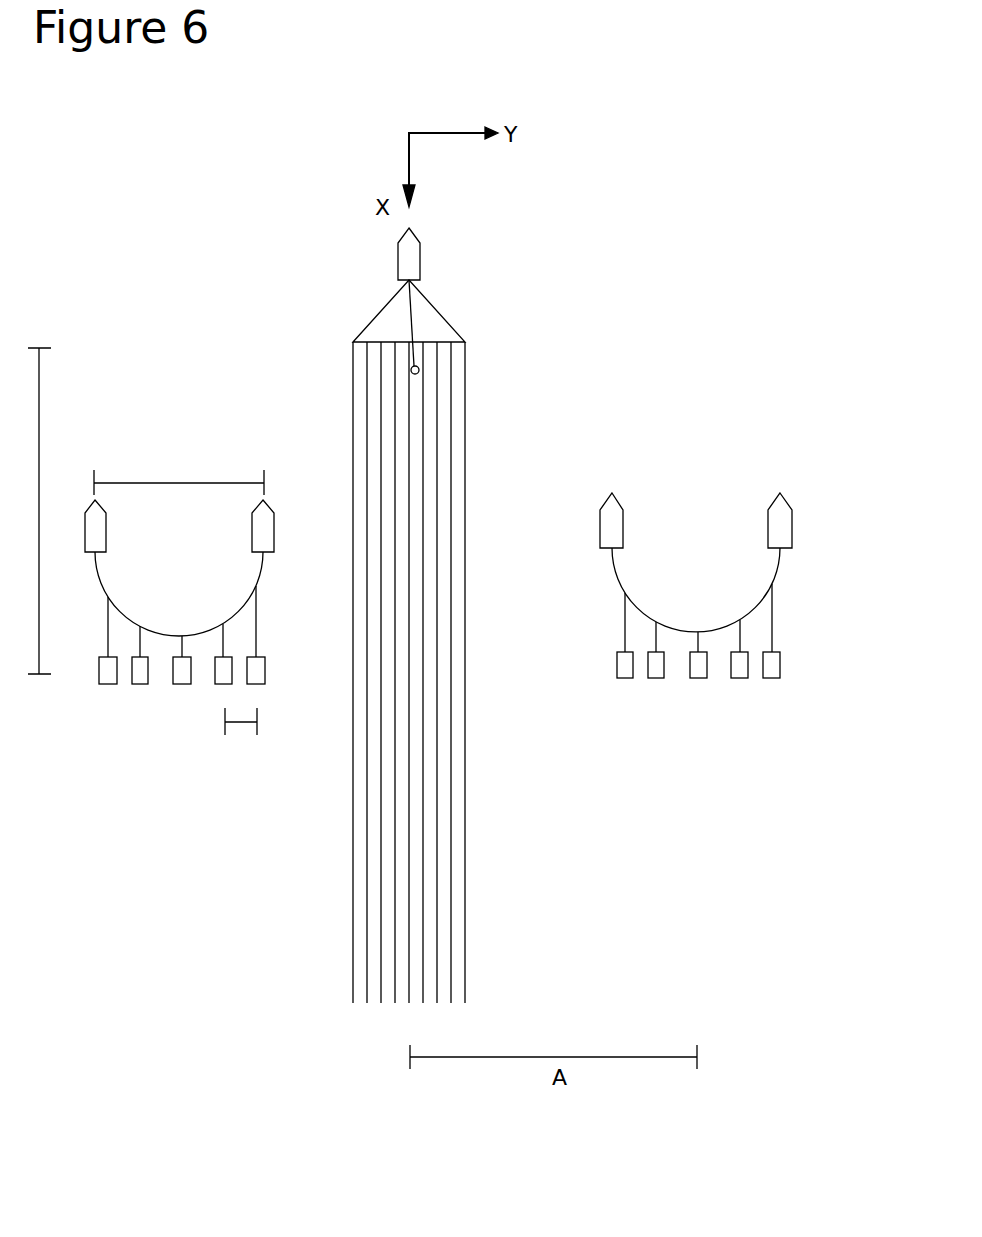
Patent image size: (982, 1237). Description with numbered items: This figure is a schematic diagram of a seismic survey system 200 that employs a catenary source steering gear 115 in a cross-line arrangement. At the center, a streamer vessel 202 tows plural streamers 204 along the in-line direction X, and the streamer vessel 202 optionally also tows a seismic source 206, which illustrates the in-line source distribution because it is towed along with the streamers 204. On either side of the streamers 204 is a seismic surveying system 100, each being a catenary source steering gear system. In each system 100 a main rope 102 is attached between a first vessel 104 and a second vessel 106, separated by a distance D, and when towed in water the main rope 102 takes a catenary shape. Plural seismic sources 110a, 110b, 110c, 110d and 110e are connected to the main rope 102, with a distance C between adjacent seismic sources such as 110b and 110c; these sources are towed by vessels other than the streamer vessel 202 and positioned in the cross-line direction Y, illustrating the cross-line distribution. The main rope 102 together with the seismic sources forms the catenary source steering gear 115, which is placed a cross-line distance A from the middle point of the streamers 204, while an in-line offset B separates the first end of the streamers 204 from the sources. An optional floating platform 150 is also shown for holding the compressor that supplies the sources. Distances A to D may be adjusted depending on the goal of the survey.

The seismic survey system 200 is at (295, 195).
The streamer vessel 202 is at (408, 262).
The streamers 204 is at (422, 412).
The seismic source 206 is at (418, 367).
The seismic surveying system 100 is at (204, 402).
The main rope 102 is at (128, 612).
The first vessel 104 is at (90, 520).
The second vessel 106 is at (275, 531).
The seismic source 110a is at (103, 675).
The seismic source 110b is at (142, 673).
The seismic source 110c is at (183, 675).
The seismic source 110d is at (770, 673).
The seismic source 110e is at (258, 673).
The catenary source steering gear 115 is at (273, 577).
The floating platform 150 is at (695, 673).